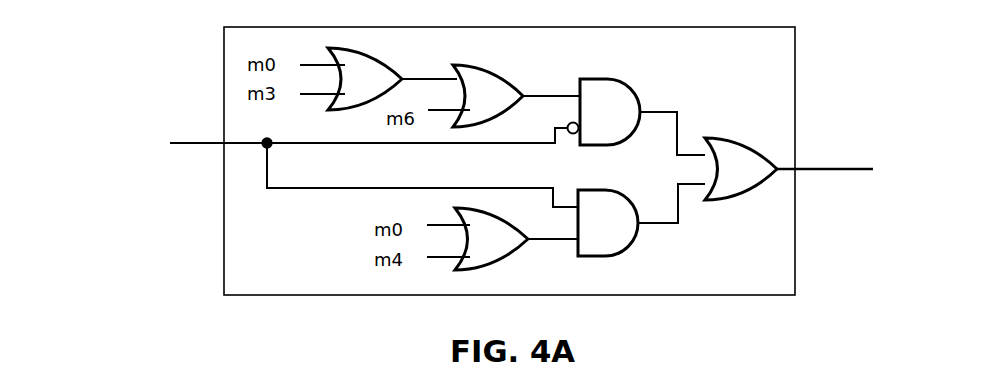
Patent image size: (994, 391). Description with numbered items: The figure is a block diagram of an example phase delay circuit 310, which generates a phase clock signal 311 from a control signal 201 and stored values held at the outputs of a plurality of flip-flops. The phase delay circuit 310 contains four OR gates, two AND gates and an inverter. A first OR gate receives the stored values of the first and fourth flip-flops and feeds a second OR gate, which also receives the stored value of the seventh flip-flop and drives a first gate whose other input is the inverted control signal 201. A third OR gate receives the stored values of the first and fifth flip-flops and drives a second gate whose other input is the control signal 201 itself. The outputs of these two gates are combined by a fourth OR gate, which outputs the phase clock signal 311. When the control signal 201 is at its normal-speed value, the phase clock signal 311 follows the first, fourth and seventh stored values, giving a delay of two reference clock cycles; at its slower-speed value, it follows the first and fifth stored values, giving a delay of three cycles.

The phase delay circuit 310 is at (125, 57).
The control signal 201 is at (298, 165).
The phase clock signal 311 is at (847, 169).